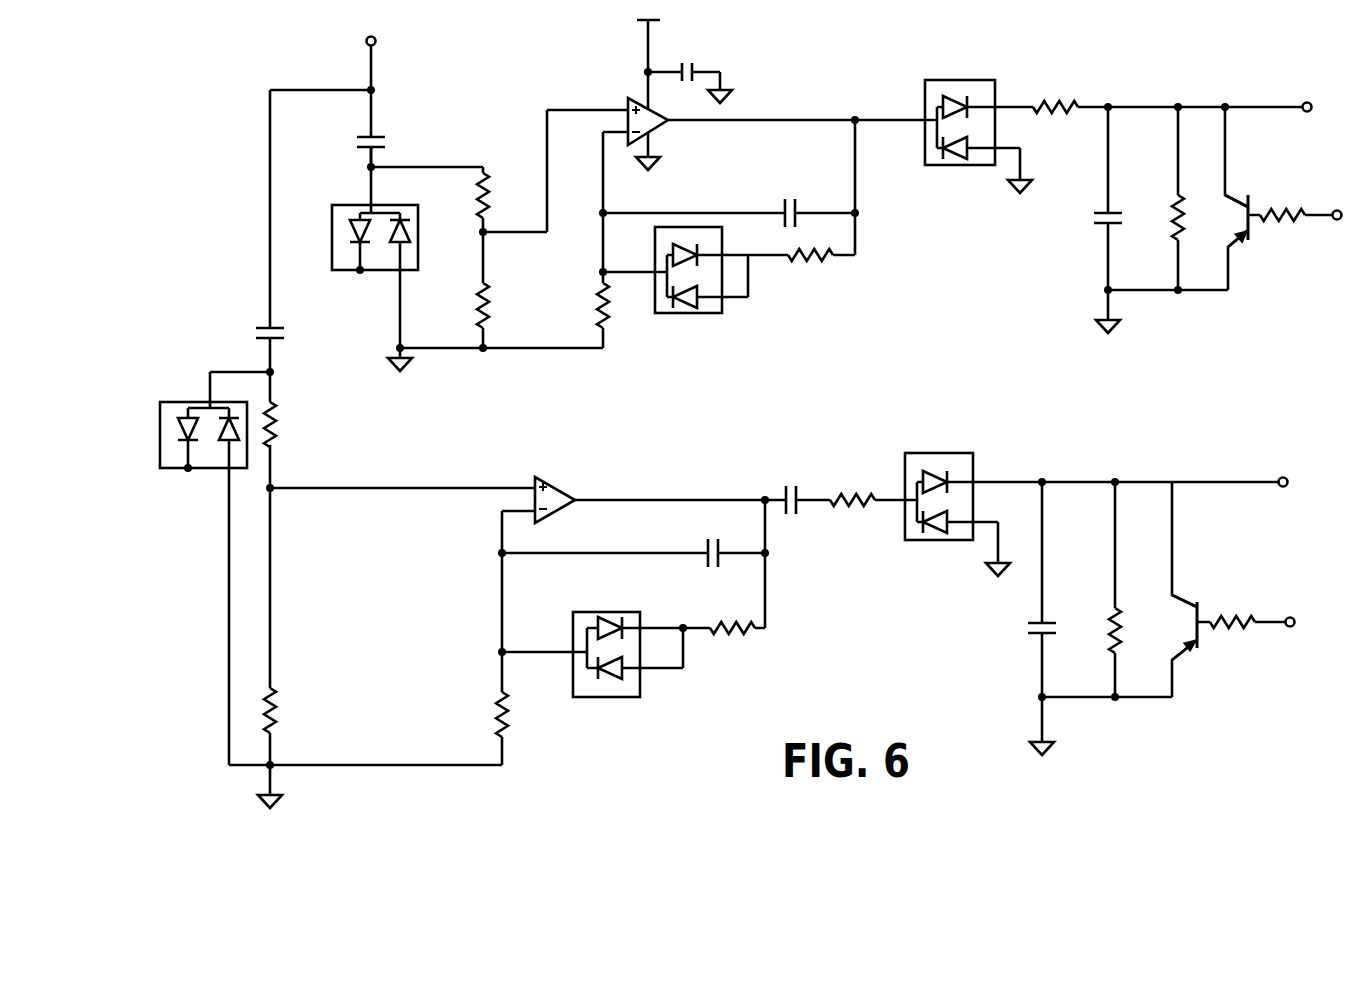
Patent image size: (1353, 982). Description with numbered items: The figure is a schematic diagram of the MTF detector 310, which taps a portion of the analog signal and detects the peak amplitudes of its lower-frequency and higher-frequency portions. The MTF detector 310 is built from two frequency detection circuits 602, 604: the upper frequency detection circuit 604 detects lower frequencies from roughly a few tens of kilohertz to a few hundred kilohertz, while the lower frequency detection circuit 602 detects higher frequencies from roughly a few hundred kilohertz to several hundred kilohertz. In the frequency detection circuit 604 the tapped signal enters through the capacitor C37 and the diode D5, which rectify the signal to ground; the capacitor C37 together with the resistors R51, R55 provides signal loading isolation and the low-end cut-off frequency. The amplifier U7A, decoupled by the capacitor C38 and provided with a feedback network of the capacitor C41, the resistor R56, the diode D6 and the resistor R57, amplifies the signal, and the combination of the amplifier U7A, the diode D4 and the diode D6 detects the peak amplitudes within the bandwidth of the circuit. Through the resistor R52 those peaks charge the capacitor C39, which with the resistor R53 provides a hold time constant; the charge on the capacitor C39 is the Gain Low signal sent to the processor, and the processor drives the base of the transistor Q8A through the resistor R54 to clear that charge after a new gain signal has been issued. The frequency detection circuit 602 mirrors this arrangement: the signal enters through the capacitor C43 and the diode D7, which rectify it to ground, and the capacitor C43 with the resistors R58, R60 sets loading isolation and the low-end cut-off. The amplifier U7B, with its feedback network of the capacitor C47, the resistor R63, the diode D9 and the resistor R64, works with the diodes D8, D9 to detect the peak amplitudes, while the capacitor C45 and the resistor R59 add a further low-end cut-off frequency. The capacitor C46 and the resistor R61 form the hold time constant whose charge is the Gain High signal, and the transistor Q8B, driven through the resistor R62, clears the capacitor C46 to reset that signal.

The MTF detector 310 is at (652, 801).
The frequency detection circuit 602 is at (853, 427).
The frequency detection circuit 604 is at (954, 262).
The capacitor C37 is at (395, 128).
The diode D5 is at (370, 264).
The resistor R51 is at (464, 192).
The resistor R55 is at (464, 305).
The capacitor C43 is at (295, 335).
The diode D7 is at (203, 403).
The resistor R58 is at (299, 424).
The resistor R60 is at (301, 710).
The amplifier U7A is at (627, 107).
The capacitor C38 is at (701, 56).
The capacitor C41 is at (791, 201).
The diode D6 is at (688, 288).
The resistor R56 is at (811, 273).
The resistor R57 is at (583, 305).
The diode D4 is at (960, 109).
The resistor R52 is at (1056, 92).
The capacitor C39 is at (1087, 220).
The resistor R53 is at (1158, 205).
The transistor Q8A is at (1254, 202).
The resistor R54 is at (1292, 202).
The amplifier U7B is at (567, 487).
The resistor R64 is at (480, 714).
The capacitor C45 is at (791, 485).
The capacitor C47 is at (717, 541).
The diode D9 is at (606, 668).
The resistor R63 is at (732, 647).
The resistor R59 is at (852, 519).
The diode D8 is at (939, 485).
The capacitor C46 is at (1018, 630).
The resistor R61 is at (1097, 617).
The transistor Q8B is at (1199, 609).
The resistor R62 is at (1250, 608).